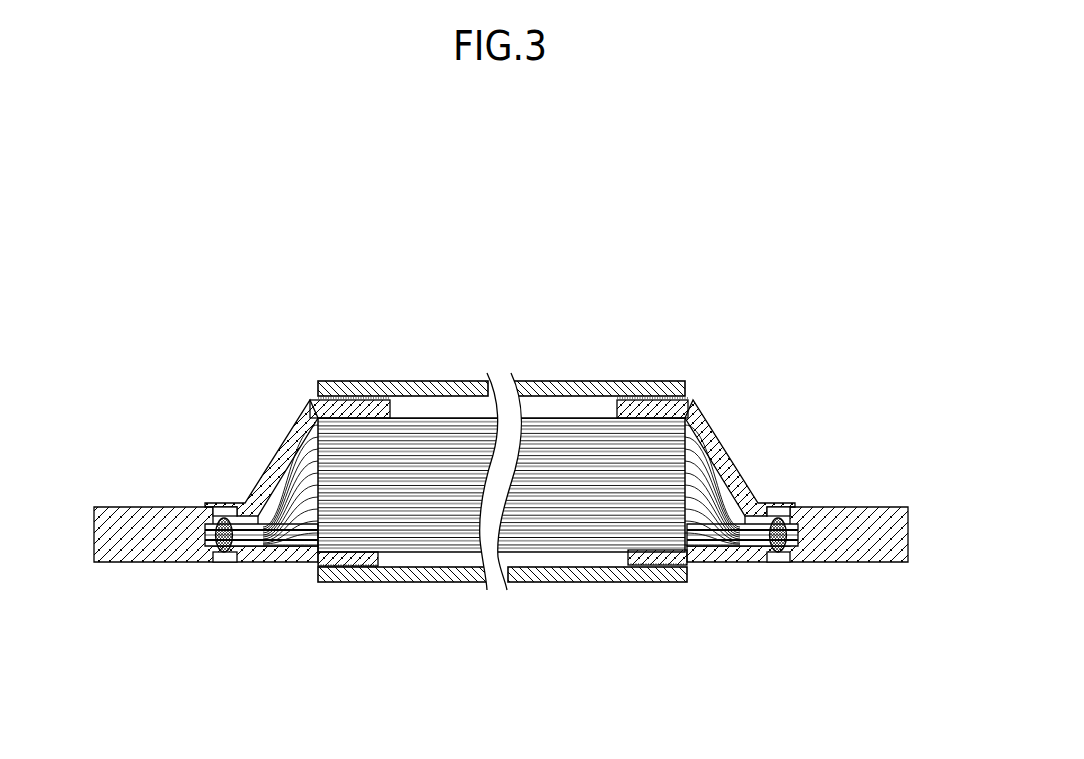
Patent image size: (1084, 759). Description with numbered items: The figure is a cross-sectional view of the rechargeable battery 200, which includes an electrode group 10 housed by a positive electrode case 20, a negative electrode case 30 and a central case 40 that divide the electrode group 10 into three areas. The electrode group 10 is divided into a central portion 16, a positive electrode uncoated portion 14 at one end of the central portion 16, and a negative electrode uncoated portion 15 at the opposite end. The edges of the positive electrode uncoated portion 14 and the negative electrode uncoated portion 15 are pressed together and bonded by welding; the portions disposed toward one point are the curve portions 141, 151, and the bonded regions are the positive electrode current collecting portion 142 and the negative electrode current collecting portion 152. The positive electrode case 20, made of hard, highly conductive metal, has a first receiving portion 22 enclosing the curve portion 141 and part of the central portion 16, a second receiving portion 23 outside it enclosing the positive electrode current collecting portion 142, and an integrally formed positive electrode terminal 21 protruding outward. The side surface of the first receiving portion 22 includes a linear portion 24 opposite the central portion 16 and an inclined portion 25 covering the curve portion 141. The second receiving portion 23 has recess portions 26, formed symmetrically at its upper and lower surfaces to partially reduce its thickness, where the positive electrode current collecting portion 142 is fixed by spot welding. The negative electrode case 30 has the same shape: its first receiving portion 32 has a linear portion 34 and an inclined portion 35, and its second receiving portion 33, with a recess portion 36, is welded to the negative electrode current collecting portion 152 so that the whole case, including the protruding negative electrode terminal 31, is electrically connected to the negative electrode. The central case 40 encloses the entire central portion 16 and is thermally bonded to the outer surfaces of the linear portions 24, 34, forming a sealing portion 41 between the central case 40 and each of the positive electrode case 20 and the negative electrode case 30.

The rechargeable battery 200 is at (533, 190).
The electrode group 10 is at (407, 562).
The positive electrode uncoated portion 14 is at (325, 684).
The curve portion 141 is at (305, 567).
The positive electrode current collecting portion 142 is at (254, 565).
The negative electrode uncoated portion 15 is at (775, 684).
The curve portion 151 is at (697, 565).
The negative electrode current collecting portion 152 is at (750, 565).
The central portion 16 is at (619, 565).
The positive electrode case 20 is at (150, 567).
The positive electrode terminal 21 is at (116, 506).
The first receiving portion 22 is at (358, 313).
The second receiving portion 23 is at (210, 507).
The linear portion 24 is at (332, 402).
The inclined portion 25 is at (270, 470).
The recess portion 26 is at (223, 506).
The negative electrode case 30 is at (853, 567).
The negative electrode terminal 31 is at (886, 506).
The first receiving portion 32 is at (742, 313).
The second receiving portion 33 is at (792, 507).
The linear portion 34 is at (664, 404).
The inclined portion 35 is at (730, 445).
The recess portion 36 is at (776, 505).
The central case 40 is at (586, 382).
The sealing portion 41 is at (381, 390).